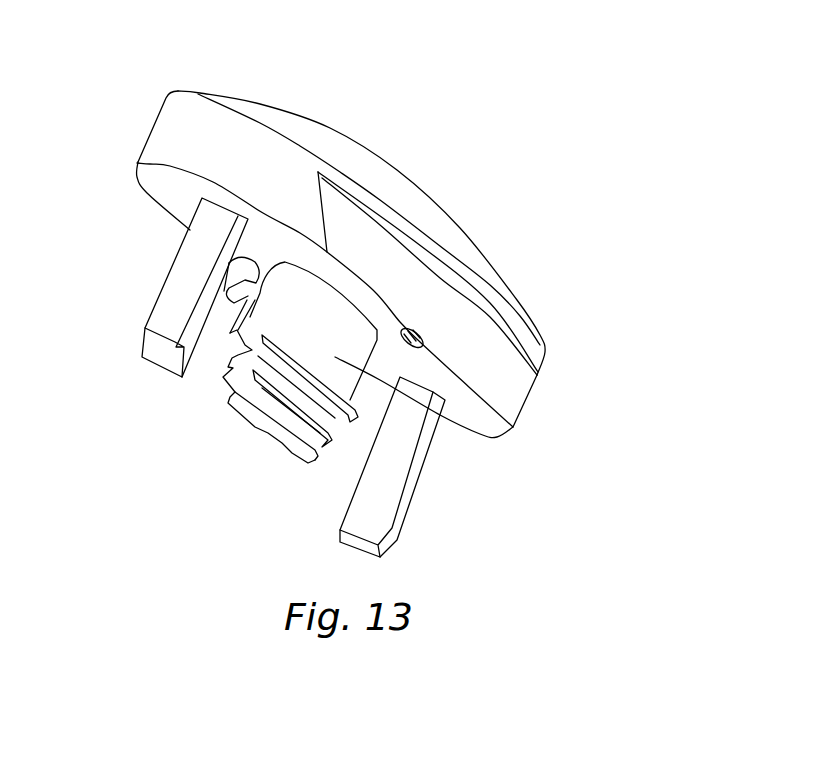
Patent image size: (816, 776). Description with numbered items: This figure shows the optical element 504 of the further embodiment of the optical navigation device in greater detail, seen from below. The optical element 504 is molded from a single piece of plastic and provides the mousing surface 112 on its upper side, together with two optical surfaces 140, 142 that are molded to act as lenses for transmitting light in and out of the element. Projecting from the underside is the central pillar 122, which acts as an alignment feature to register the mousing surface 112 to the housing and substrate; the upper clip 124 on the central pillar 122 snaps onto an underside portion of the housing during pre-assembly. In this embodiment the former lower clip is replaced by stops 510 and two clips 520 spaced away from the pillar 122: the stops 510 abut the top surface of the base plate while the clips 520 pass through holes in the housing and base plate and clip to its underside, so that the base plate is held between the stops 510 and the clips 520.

The mousing surface 112 is at (392, 160).
The central pillar 122 is at (392, 408).
The upper clip 124 is at (310, 374).
The optical surface 140 is at (246, 270).
The optical surface 142 is at (418, 338).
The optical element 504 is at (530, 156).
The stops 510 is at (288, 397).
The clips 520 is at (187, 280).